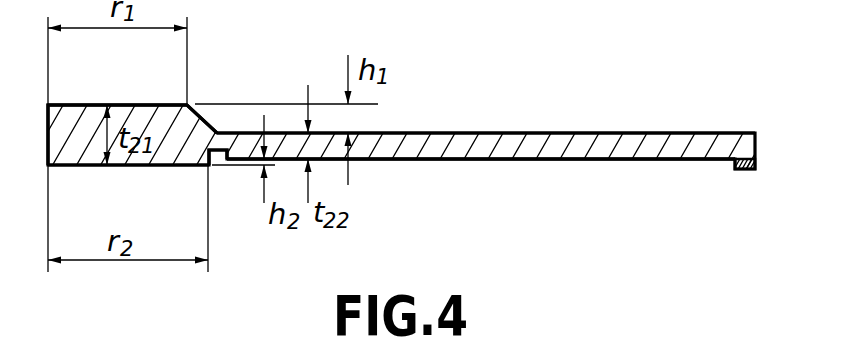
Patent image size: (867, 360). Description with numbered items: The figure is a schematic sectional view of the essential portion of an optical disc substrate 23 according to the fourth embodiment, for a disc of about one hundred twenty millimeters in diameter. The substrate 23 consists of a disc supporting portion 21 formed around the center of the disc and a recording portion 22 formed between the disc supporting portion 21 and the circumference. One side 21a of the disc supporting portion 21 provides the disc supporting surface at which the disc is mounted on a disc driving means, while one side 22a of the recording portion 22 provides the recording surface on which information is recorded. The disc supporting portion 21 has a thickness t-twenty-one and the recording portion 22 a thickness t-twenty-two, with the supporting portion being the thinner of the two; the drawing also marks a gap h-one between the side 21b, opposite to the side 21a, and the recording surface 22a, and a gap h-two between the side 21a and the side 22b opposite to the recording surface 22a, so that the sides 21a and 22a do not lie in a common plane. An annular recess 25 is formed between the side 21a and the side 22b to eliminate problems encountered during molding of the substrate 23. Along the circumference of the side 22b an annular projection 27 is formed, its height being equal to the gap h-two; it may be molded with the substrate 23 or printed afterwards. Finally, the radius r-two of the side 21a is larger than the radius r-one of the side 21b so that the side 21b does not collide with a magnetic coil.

The disc supporting portion 21 is at (86, 167).
The side of the disc supporting portion 21a is at (157, 167).
The side opposite to the side 21a of the disc supporting portion 21b is at (121, 104).
The recording portion 22 is at (507, 161).
The side of the recording portion 22a is at (543, 132).
The side opposite to the side 22a of the recording portion 22b is at (593, 161).
The optical disc substrate 23 is at (670, 116).
The annular recess 25 is at (221, 167).
The annular projection 27 is at (736, 170).